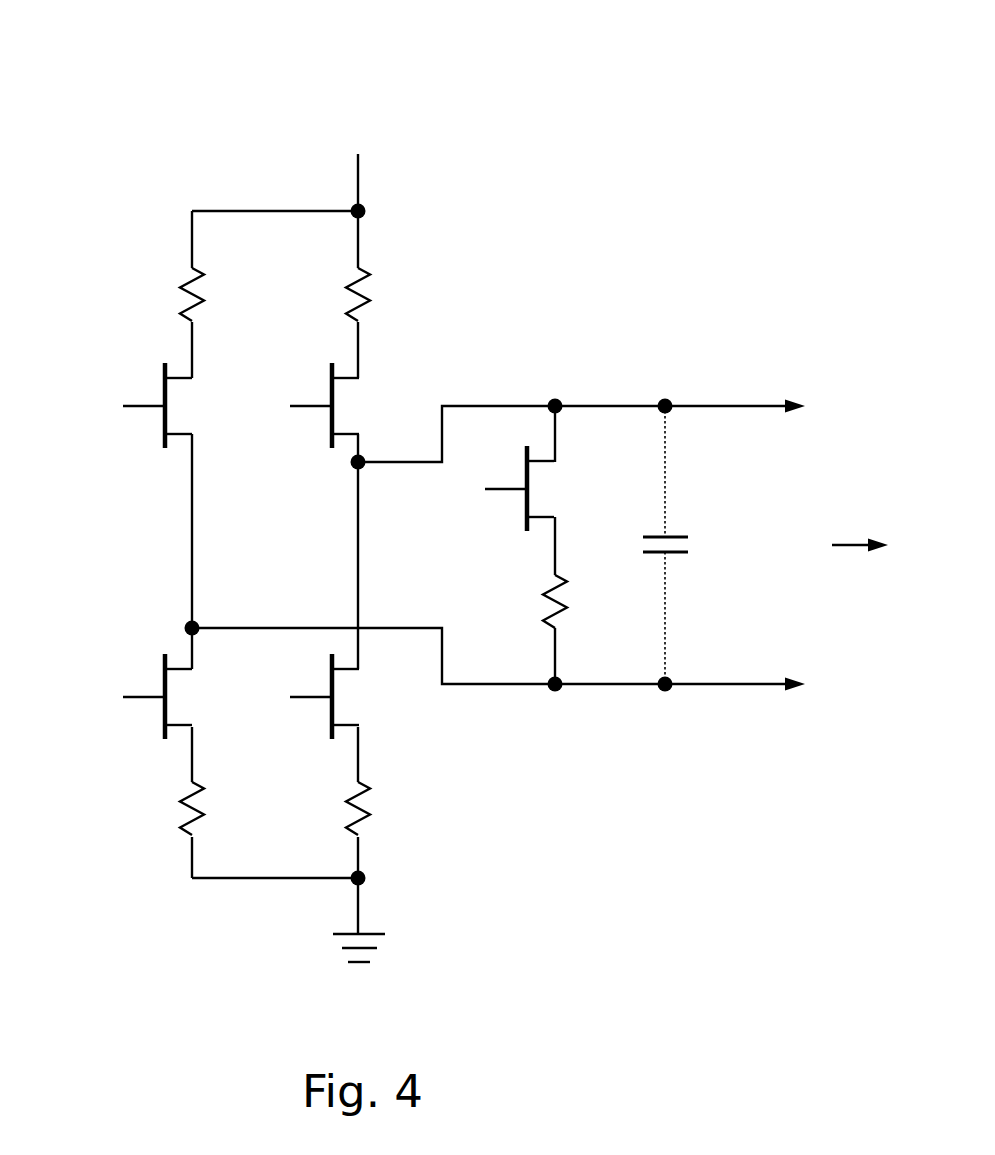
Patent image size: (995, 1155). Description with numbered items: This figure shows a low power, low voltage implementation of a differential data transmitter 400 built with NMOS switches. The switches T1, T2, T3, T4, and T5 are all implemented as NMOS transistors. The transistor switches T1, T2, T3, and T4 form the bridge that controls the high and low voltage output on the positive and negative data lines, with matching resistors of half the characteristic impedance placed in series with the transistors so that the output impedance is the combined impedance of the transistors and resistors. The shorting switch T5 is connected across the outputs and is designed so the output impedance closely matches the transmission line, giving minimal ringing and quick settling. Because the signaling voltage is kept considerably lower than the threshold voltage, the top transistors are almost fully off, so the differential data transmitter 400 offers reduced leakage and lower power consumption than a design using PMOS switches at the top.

The differential data transmitter 400 is at (143, 155).
The switch T1 is at (186, 405).
The switch T2 is at (186, 696).
The switch T3 is at (352, 405).
The switch T4 is at (352, 696).
The switch T5 is at (495, 488).